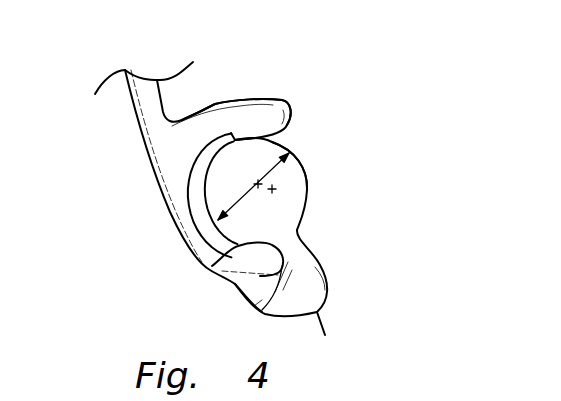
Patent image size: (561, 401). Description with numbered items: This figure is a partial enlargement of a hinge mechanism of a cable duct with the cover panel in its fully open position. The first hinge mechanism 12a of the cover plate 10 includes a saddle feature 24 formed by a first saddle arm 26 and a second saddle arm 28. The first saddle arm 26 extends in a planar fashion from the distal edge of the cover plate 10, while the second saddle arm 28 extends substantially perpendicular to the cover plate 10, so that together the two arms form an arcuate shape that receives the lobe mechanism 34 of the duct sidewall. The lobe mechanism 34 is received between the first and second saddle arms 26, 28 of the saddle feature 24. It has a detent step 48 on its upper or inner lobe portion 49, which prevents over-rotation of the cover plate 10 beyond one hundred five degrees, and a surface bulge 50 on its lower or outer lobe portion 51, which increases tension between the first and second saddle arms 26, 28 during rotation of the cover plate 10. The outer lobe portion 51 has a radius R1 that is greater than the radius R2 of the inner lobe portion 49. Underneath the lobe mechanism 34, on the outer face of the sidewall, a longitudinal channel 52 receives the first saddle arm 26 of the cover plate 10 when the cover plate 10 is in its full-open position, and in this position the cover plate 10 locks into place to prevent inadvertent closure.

The cover plate 10 is at (128, 93).
The first hinge mechanism 12a is at (280, 80).
The saddle feature 24 is at (170, 168).
The first saddle arm 26 is at (233, 283).
The second saddle arm 28 is at (238, 108).
The lobe mechanism 34 is at (290, 182).
The detent step 48 is at (232, 134).
The inner lobe portion 49 is at (283, 147).
The surface bulge 50 is at (212, 266).
The outer lobe portion 51 is at (208, 150).
The longitudinal channel 52 is at (283, 246).
The radius of the outer lobe portion R1 is at (216, 219).
The radius of the inner lobe portion R2 is at (278, 170).